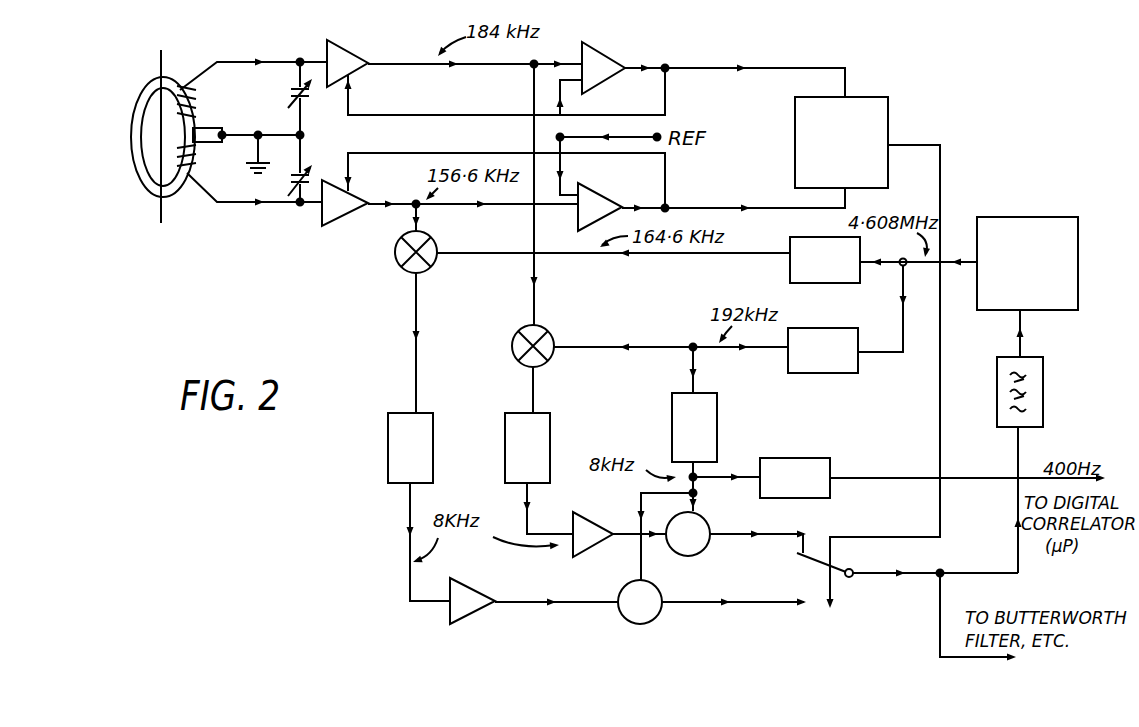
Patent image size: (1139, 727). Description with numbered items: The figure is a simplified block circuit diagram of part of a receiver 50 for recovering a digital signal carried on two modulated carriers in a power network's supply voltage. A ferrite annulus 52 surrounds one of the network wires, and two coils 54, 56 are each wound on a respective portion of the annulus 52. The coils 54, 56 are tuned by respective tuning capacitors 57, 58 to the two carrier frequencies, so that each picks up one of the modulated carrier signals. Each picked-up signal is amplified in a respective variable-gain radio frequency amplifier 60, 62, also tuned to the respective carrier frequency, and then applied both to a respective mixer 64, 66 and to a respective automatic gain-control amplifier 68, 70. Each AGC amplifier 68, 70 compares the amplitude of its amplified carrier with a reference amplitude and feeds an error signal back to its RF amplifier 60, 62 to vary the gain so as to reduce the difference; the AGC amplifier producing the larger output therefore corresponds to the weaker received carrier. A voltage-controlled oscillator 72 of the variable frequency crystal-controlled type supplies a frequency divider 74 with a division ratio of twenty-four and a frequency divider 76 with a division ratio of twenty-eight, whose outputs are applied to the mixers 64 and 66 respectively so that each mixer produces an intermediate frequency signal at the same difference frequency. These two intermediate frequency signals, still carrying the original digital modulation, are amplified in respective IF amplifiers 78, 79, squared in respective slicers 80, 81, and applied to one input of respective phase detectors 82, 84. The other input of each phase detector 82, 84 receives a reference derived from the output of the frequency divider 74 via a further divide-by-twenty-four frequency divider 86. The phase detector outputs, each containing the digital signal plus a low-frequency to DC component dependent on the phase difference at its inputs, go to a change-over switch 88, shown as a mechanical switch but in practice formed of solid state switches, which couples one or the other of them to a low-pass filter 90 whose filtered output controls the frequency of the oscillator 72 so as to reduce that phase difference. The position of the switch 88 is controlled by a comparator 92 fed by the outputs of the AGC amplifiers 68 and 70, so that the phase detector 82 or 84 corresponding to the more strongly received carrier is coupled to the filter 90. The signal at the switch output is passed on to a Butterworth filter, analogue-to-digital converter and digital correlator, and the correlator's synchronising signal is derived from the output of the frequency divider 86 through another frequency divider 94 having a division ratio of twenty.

The receiver 50 is at (548, 643).
The ferrite annulus 52 is at (136, 190).
The coil 54 is at (190, 98).
The coil 56 is at (206, 190).
The tuning capacitor 57 is at (309, 101).
The tuning capacitor 58 is at (287, 196).
The variable-gain radio frequency amplifier 60 is at (334, 50).
The variable-gain radio frequency amplifier 62 is at (328, 226).
The mixer 64 is at (516, 330).
The mixer 66 is at (401, 270).
The automatic gain-control amplifier 68 is at (594, 59).
The automatic gain-control amplifier 70 is at (592, 202).
The voltage-controlled oscillator 72 is at (1027, 216).
The frequency divider 74 is at (851, 330).
The frequency divider 76 is at (790, 276).
The IF amplifier 78 is at (505, 448).
The IF amplifier 79 is at (388, 440).
The slicer 80 is at (573, 548).
The slicer 81 is at (472, 620).
The phase detector 82 is at (695, 555).
The phase detector 84 is at (629, 624).
The divide-by-24 frequency divider 86 is at (672, 412).
The change-over switch 88 is at (847, 591).
The low-pass filter 90 is at (1044, 386).
The comparator 92 is at (794, 132).
The frequency divider 94 is at (800, 457).